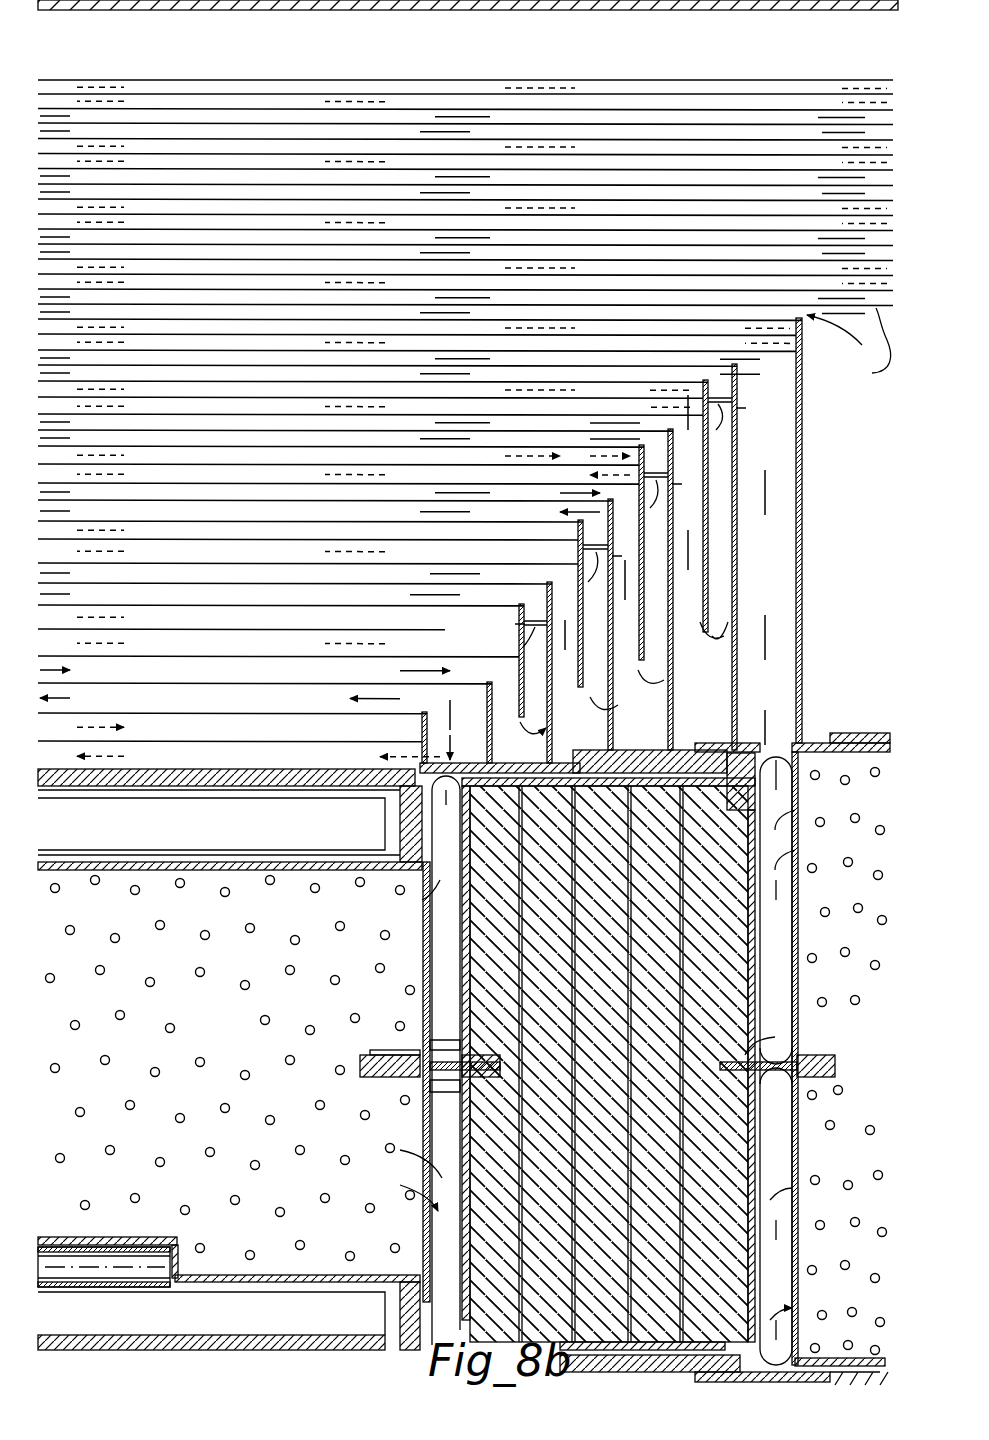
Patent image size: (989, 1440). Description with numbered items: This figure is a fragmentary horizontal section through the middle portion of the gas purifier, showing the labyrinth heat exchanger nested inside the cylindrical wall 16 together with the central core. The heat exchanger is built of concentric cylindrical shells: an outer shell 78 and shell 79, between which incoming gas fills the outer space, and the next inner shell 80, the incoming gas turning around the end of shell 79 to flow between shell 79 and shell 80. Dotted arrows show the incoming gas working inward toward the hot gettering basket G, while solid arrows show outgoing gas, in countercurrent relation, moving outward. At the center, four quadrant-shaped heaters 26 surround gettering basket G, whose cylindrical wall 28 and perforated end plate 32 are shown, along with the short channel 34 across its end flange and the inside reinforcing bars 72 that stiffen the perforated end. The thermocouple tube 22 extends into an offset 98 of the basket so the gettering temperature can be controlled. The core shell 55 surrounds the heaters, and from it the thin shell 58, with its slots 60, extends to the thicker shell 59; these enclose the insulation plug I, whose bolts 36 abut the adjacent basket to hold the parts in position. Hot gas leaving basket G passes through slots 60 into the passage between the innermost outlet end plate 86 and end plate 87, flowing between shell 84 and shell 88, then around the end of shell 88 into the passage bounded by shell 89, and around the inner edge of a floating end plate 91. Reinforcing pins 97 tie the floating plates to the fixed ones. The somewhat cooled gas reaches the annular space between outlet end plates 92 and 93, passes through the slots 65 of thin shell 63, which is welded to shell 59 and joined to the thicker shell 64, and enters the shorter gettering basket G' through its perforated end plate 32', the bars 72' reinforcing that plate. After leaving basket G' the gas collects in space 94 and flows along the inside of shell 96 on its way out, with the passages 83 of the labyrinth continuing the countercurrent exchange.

The cylindrical wall 16 is at (466, 14).
The cylindrical shell 78 is at (298, 78).
The cylindrical shell 79 is at (388, 80).
The cylindrical shell 80 is at (702, 110).
The flow passage 83 is at (226, 748).
The shell 84 is at (254, 716).
The innermost outlet end plate 86 is at (428, 738).
The end plate 87 is at (492, 740).
The shell 88 is at (300, 684).
The shell 89 is at (370, 654).
The floating end plate 91 is at (552, 712).
The outlet end plate 92 is at (738, 437).
The outlet end plate 93 is at (805, 440).
The space 94 is at (857, 557).
The shell 96 is at (849, 347).
The reinforcing pins 97 is at (599, 571).
The thin shell 58 is at (408, 766).
The thicker shell 59 is at (644, 750).
The thin shell 63 is at (710, 742).
The thicker shell 64 is at (858, 732).
The heaters 26 is at (230, 1059).
The cylindrical shell 55 is at (280, 790).
The cylindrical wall 28 is at (202, 870).
The perforated end plate 32 is at (385, 910).
The perforated end plate 32' is at (833, 1162).
The channel 34 is at (436, 1042).
The bolts 36 is at (440, 1090).
The slots 60 is at (428, 1188).
The slots 65 is at (764, 820).
The reinforcing bars 72 is at (595, 1089).
The flange 72' is at (795, 1036).
The offset 98 is at (112, 1236).
The thermocouple tube 22 is at (118, 1290).
The gettering basket G is at (230, 1068).
The gettering basket G' is at (839, 1059).
The insulation plug I is at (640, 948).